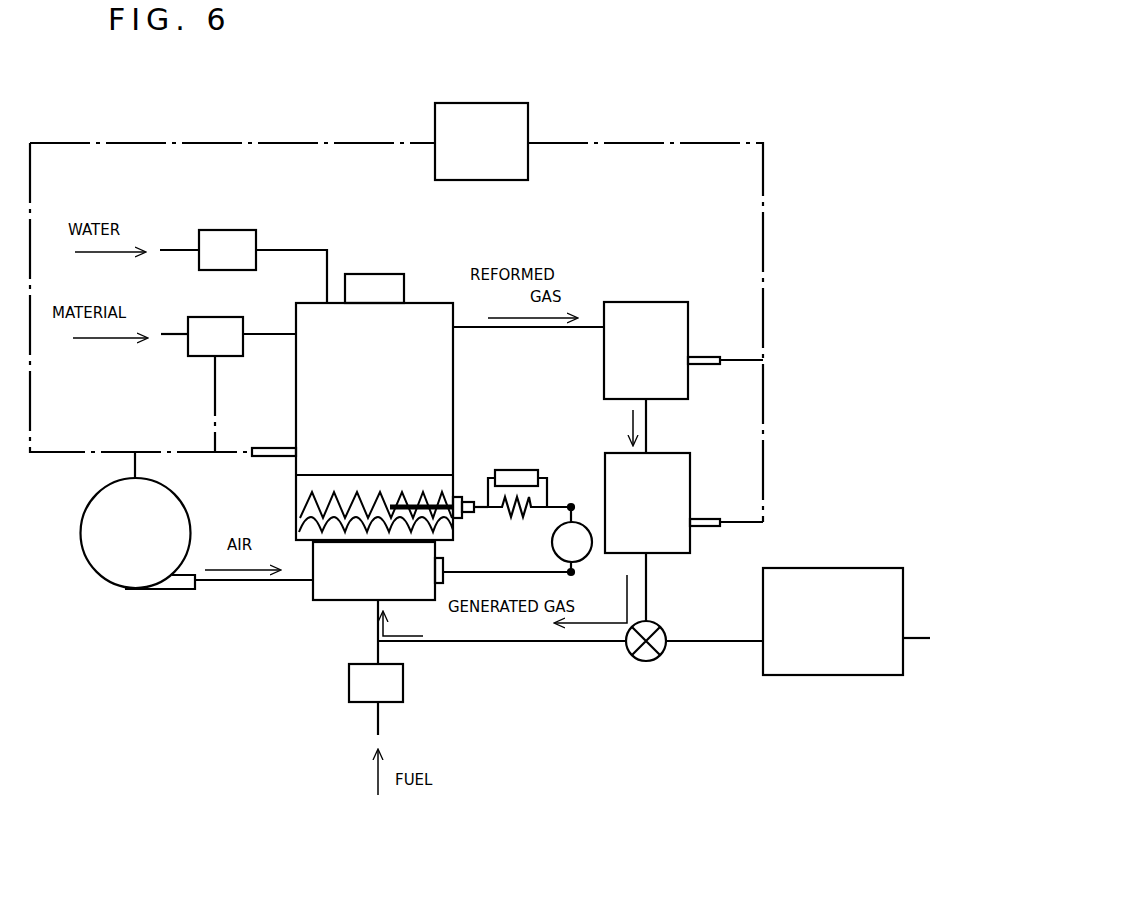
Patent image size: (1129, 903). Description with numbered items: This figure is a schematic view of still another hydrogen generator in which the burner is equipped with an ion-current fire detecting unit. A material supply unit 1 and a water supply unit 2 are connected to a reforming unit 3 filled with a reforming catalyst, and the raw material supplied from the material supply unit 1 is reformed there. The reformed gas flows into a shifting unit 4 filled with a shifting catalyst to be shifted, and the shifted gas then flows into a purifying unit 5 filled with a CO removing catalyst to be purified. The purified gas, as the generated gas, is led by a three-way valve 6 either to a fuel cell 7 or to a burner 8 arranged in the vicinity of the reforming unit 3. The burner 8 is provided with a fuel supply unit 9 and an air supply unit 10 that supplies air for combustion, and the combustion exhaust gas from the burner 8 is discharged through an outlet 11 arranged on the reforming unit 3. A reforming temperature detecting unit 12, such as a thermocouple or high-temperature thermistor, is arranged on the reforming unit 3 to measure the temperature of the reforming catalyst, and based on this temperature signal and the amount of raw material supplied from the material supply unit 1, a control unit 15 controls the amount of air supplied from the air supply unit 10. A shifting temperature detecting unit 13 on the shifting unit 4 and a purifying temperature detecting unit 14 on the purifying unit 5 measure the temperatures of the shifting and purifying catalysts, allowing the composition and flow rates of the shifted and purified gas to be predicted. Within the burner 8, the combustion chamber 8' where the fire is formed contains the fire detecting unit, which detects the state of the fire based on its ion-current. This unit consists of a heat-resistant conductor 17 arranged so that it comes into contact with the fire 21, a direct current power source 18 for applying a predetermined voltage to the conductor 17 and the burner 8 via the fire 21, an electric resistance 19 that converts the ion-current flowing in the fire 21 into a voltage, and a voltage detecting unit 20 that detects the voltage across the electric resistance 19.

The material supply unit 1 is at (200, 348).
The water supply unit 2 is at (230, 240).
The reforming unit 3 is at (428, 313).
The shifting unit 4 is at (641, 316).
The purifying unit 5 is at (683, 470).
The three-way valve 6 is at (648, 660).
The fuel cell 7 is at (848, 580).
The burner 8 is at (355, 594).
The combustion chamber 8' is at (342, 514).
The fuel supply unit 9 is at (403, 694).
The air supply unit 10 is at (140, 578).
The outlet 11 is at (382, 282).
The reforming temperature detecting unit 12 is at (275, 447).
The shifting temperature detecting unit 13 is at (708, 356).
The purifying temperature detecting unit 14 is at (705, 528).
The control unit 15 is at (508, 118).
The heat-resistant conductor 17 is at (420, 506).
The direct current power source 18 is at (573, 508).
The electric resistance 19 is at (508, 518).
The voltage detecting unit 20 is at (518, 470).
The fire 21 is at (300, 500).